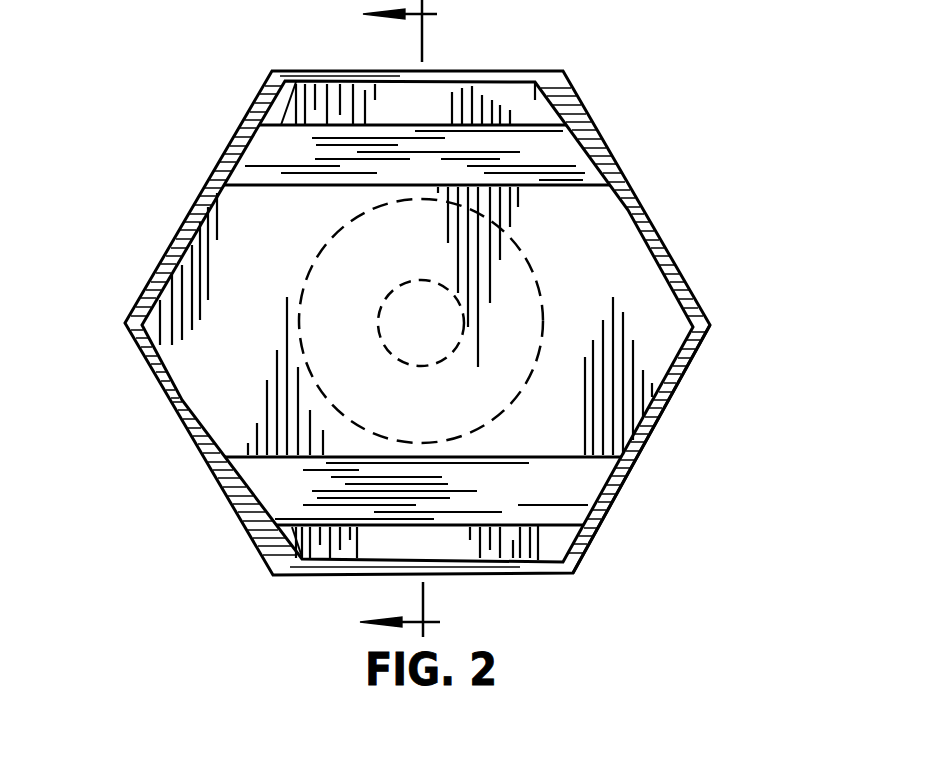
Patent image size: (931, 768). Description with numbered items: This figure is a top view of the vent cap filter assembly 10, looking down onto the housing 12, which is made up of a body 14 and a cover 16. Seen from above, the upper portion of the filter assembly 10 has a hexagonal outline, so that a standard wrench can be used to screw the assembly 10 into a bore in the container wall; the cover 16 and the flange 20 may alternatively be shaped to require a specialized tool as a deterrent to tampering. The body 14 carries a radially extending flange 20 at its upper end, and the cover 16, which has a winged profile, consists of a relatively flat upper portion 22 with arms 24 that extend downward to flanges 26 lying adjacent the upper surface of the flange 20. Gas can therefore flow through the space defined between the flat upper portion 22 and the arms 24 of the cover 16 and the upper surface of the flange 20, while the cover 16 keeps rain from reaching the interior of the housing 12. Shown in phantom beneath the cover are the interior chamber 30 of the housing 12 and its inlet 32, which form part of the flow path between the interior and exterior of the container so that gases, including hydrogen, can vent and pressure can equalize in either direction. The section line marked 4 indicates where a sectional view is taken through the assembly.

The section line 4- 4 is at (413, 320).
The filter assembly 10 is at (462, 301).
The housing 12 is at (663, 449).
The body 14 is at (451, 321).
The cover 16 is at (500, 142).
The flange 20 is at (350, 528).
The upper portion 22 is at (413, 321).
The arms 24 is at (369, 488).
The flanges 26 is at (347, 559).
The interior chamber 30 is at (317, 252).
The inlet 32 is at (377, 317).